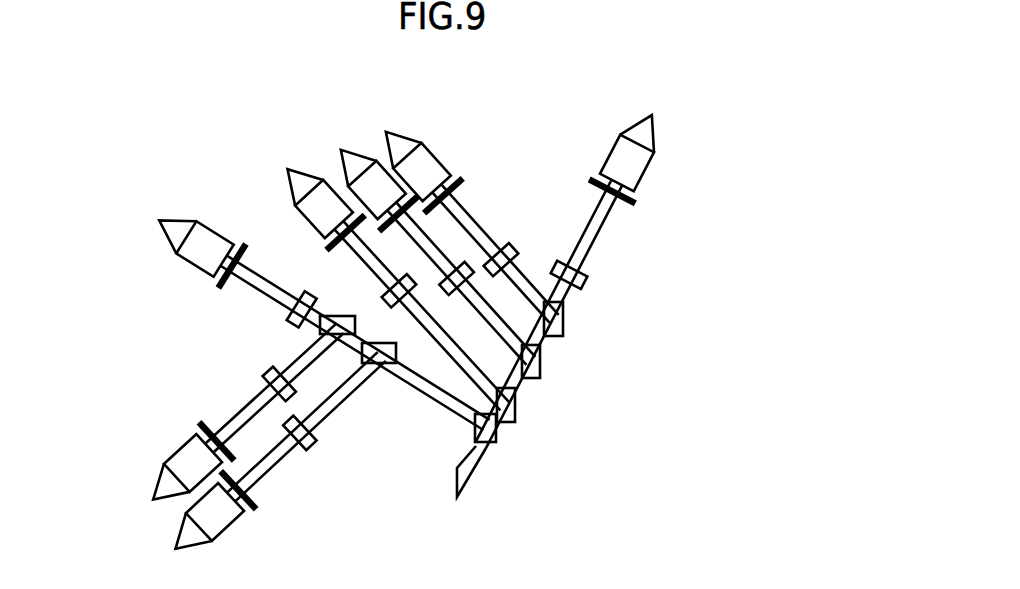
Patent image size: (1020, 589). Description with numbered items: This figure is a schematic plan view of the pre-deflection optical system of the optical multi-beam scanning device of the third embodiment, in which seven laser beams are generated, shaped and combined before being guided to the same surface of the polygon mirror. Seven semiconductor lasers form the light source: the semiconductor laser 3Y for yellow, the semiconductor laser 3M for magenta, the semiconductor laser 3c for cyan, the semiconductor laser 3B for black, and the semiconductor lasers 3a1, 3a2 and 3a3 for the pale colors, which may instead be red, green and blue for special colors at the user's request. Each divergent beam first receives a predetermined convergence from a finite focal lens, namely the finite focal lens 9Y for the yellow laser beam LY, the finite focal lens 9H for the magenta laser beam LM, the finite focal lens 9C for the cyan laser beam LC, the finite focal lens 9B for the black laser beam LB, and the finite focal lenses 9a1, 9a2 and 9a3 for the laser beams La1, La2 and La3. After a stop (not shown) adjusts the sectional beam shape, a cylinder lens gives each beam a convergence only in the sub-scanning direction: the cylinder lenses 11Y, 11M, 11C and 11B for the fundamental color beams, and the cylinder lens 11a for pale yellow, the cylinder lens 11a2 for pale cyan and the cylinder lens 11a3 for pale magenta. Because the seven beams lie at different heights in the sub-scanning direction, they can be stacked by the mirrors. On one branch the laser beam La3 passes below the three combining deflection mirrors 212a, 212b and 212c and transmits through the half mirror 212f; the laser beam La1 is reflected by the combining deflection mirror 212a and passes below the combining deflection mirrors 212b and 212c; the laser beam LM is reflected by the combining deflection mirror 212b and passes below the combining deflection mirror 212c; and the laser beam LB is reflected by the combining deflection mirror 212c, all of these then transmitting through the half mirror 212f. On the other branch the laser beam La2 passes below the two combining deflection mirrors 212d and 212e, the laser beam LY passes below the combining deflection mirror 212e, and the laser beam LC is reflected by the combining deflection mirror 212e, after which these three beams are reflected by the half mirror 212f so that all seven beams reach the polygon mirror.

The semiconductor laser 3a1 is at (386, 132).
The semiconductor laser 3M is at (341, 150).
The semiconductor laser 3B is at (289, 166).
The semiconductor laser 3a2 is at (159, 220).
The semiconductor laser 3a3 is at (653, 115).
The semiconductor laser 3Y is at (153, 500).
The semiconductor laser 3c is at (176, 549).
The finite focal lens 9a1 is at (437, 163).
The finite focal lens 9H is at (376, 161).
The finite focal lens 9B is at (324, 177).
The finite focal lens 9a2 is at (193, 262).
The finite focal lens 9a3 is at (611, 156).
The finite focal lens 9Y is at (180, 450).
The finite focal lens 9C is at (244, 511).
The cylinder lens 11a is at (514, 251).
The cylinder lens 11M is at (445, 296).
The cylinder lens 11B is at (402, 312).
The cylinder lens 11a2 is at (287, 321).
The cylinder lens 11a3 is at (581, 291).
The cylinder lens 11Y is at (262, 376).
The cylinder lens 11C is at (317, 445).
The laser beam La1 is at (503, 256).
The laser beam LM is at (433, 246).
The laser beam LB is at (392, 278).
The laser beam La2 is at (253, 284).
The laser beam La3 is at (594, 245).
The laser beam LY is at (237, 414).
The laser beam LC is at (285, 453).
The combining deflection mirror 212a is at (563, 336).
The combining deflection mirror 212b is at (540, 378).
The combining deflection mirror 212c is at (515, 422).
The combining deflection mirror 212d is at (342, 316).
The combining deflection mirror 212e is at (376, 343).
The half mirror 212f is at (481, 460).